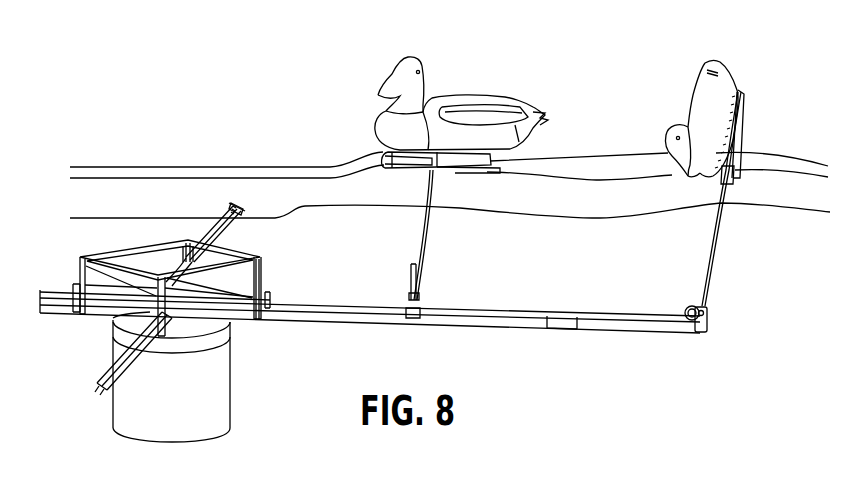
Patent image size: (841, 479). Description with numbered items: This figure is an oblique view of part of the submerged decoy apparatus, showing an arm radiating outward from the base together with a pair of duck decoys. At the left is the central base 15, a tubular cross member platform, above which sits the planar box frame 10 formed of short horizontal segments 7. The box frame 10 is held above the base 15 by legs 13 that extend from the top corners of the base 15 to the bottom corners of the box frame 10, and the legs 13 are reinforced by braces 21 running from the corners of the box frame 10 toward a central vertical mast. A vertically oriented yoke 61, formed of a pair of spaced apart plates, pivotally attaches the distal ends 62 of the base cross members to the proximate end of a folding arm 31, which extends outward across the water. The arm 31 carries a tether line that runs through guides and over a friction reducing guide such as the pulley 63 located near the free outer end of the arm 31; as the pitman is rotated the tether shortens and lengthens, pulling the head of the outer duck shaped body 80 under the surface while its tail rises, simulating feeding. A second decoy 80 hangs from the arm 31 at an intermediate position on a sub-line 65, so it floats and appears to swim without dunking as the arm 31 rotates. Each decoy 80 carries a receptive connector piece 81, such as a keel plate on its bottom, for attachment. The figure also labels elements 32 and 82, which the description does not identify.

The short horizontal segments 7 is at (117, 250).
The planar box frame 10 is at (141, 242).
The legs 13 is at (268, 283).
The central base 15 is at (231, 318).
The braces 21 is at (190, 255).
The folding arm 31 is at (68, 311).
The arm pivot joint 32 is at (237, 239).
The yoke 61 is at (718, 270).
The distal ends of cross members 62 is at (213, 246).
The pulley 63 is at (690, 308).
The sub-lines 65 is at (428, 248).
The duck shaped bodies 80 is at (451, 112).
The receptive connector piece 81 is at (408, 170).
The floating platform 82 is at (453, 165).